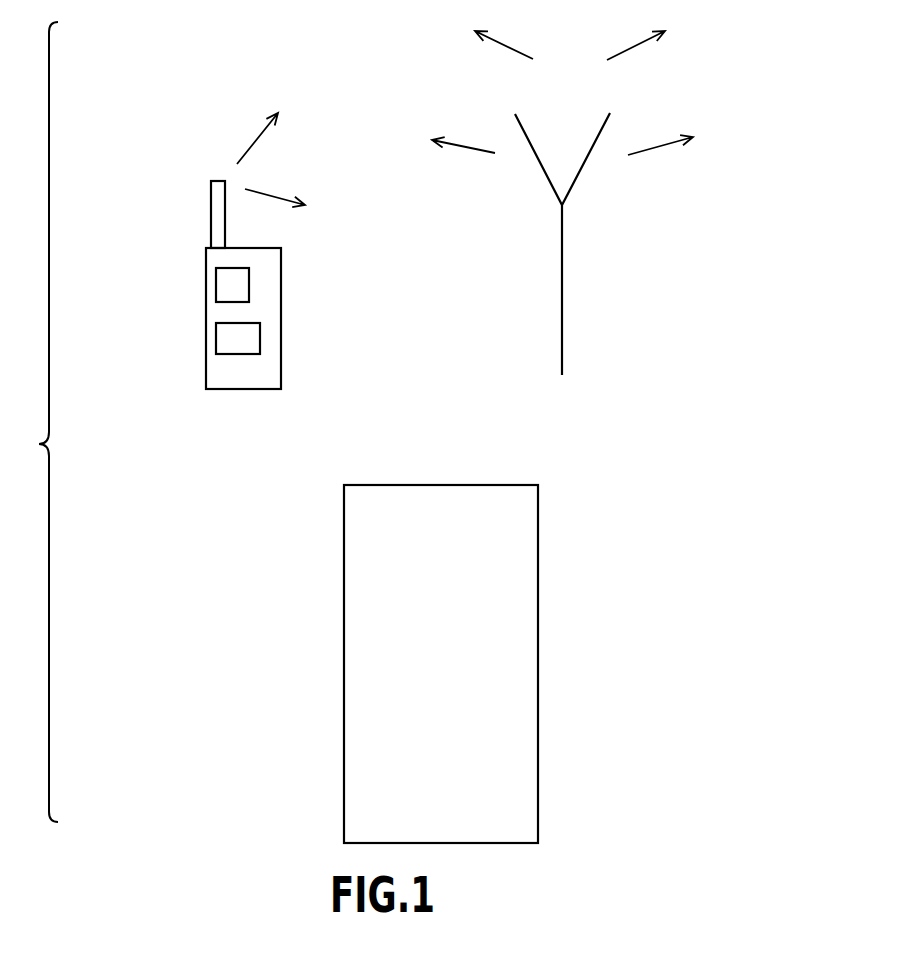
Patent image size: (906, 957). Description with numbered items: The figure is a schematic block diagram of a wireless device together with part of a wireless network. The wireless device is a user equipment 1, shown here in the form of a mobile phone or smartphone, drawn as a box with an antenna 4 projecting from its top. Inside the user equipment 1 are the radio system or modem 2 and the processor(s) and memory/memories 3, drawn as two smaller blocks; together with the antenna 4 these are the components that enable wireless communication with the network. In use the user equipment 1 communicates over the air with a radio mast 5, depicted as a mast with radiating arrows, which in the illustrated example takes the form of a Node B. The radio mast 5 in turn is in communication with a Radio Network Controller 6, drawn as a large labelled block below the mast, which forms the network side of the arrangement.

The user equipment 1 is at (206, 290).
The modem 2 is at (245, 286).
The processor(s) and memory/memories 3 is at (245, 342).
The antenna 4 is at (211, 213).
The radio mast 5 is at (562, 267).
The Radio Network Controller 6 is at (539, 661).